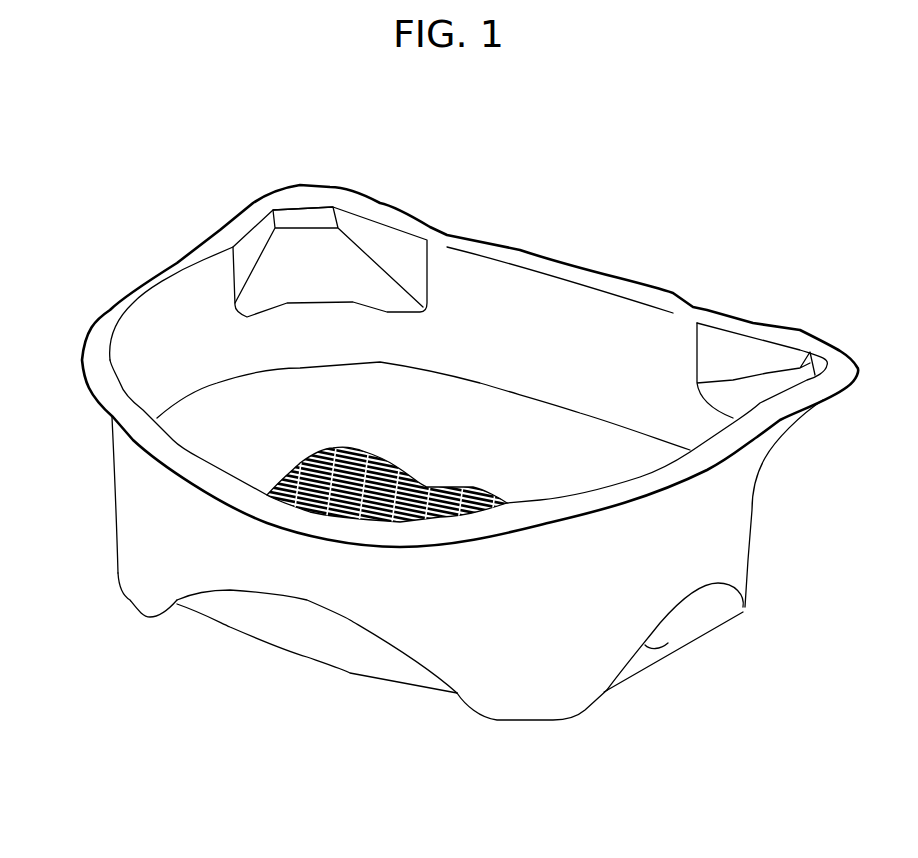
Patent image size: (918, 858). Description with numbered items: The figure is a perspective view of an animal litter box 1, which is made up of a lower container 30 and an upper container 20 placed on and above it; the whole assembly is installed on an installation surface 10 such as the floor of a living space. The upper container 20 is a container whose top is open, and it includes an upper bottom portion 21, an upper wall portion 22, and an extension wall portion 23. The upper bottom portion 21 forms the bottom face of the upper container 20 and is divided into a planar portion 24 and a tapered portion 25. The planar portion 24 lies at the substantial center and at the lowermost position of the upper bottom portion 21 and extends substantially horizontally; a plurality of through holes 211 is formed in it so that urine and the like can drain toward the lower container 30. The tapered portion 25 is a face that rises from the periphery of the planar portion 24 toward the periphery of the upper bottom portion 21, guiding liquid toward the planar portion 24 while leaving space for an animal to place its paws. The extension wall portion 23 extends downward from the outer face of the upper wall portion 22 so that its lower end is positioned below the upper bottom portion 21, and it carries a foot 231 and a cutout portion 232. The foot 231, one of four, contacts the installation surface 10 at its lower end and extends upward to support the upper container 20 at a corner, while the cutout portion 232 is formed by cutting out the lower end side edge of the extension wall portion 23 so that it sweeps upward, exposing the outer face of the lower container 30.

The animal litter box 1 is at (573, 165).
The installation surface 10 is at (753, 677).
The upper container 20 is at (628, 277).
The upper bottom portion 21 is at (234, 398).
The through hole 211 is at (428, 495).
The upper wall portion 22 is at (157, 347).
The extension wall portion 23 is at (131, 500).
The foot 231 is at (131, 577).
The cutout portion 232 is at (303, 602).
The planar portion 24 is at (486, 476).
The tapered portion 25 is at (590, 440).
The lower container 30 is at (635, 683).